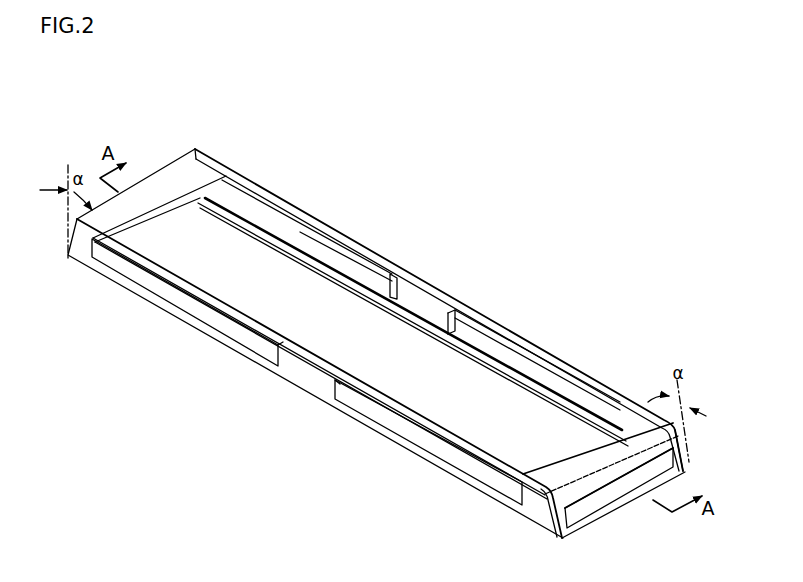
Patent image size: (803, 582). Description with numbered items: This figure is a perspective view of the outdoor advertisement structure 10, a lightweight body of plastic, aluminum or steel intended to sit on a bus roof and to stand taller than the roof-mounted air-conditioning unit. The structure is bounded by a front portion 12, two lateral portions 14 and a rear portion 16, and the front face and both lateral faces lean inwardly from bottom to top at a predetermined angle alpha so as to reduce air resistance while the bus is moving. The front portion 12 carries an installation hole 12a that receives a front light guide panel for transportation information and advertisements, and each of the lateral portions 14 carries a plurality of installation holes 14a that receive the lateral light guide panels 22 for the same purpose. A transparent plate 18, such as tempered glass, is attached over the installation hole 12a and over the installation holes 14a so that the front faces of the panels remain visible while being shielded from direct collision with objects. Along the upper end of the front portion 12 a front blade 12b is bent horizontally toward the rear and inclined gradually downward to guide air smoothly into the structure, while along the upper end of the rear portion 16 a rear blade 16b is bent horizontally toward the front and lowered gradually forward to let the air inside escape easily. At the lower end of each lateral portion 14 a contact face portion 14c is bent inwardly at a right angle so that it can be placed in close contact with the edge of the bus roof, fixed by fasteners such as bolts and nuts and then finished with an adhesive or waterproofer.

The advertisement structure 10 is at (208, 124).
The front portion 12 is at (681, 474).
The installation hole 12a is at (688, 454).
The front blade 12b is at (617, 432).
The lateral portions 14 is at (420, 290).
The installation holes 14a is at (279, 354).
The contact face portion 14c is at (282, 241).
The rear portion 16 is at (170, 170).
The rear blade 16b is at (207, 177).
The transparent plate 18 is at (207, 313).
The lateral light guide panels 22 is at (356, 258).